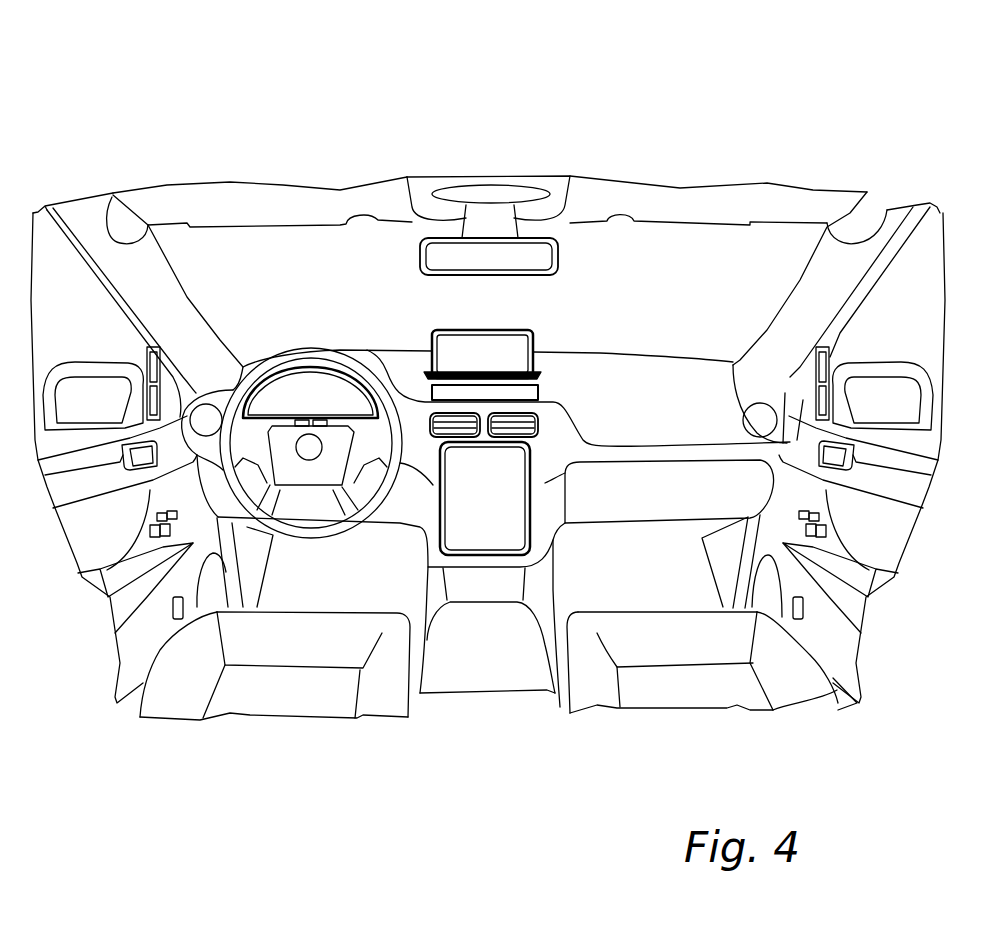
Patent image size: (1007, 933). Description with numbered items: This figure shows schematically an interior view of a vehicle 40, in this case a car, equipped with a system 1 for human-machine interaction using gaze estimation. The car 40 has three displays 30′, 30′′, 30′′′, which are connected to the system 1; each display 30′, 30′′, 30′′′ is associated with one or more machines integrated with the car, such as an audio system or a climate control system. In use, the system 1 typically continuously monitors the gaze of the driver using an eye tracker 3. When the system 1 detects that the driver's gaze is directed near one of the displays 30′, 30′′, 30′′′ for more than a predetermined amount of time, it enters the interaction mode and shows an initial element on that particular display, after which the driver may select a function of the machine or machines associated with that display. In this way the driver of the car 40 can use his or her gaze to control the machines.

The vehicle 40 is at (728, 158).
The system 1 is at (547, 387).
The eye tracker 3 is at (328, 427).
The display 30′ is at (320, 390).
The display 30′′ is at (510, 346).
The display 30′′′ is at (515, 470).